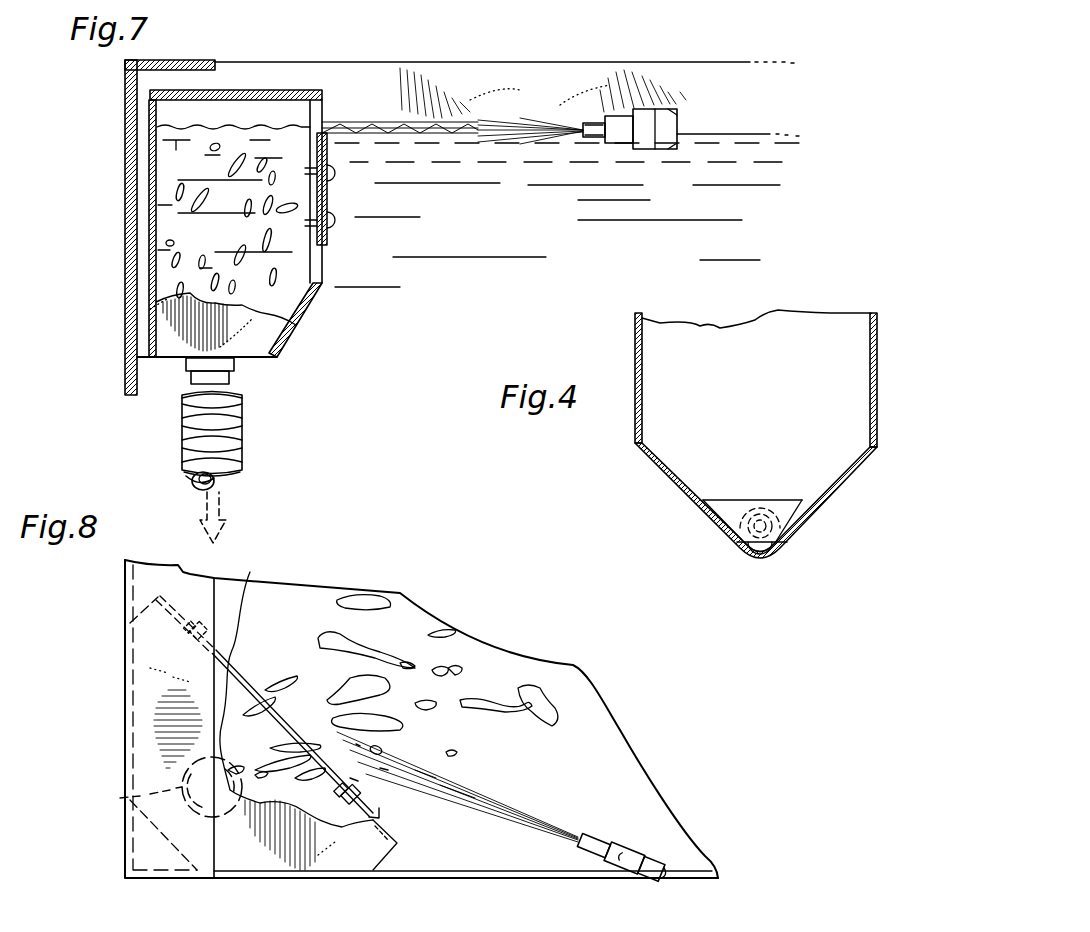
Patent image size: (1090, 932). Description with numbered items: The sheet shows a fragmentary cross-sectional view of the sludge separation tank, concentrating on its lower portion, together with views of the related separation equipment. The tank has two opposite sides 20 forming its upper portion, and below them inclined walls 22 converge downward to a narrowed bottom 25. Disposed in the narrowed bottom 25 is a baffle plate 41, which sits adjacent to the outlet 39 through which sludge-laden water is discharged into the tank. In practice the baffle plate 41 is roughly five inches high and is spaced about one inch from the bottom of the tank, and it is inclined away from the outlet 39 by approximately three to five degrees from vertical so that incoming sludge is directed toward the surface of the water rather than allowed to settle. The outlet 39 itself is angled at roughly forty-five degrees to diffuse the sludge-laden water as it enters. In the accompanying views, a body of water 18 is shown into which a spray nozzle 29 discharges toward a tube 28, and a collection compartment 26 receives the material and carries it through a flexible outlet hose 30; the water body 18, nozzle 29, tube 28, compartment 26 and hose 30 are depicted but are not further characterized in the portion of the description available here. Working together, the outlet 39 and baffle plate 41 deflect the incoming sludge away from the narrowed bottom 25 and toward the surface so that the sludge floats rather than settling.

In FIG. 7, the water / liquid body 18 is at (508, 225).
In FIG. 8, the water / liquid body 18 is at (502, 681).
In FIG. 4, the opposite sides 20 is at (880, 345).
In FIG. 4, the inclined bottom walls 22 is at (666, 480).
In FIG. 4, the narrowed bottom 25 is at (742, 556).
In FIG. 7, the sediment collection compartment 26 is at (170, 222).
In FIG. 8, the sediment collection compartment 26 is at (280, 842).
In FIG. 7, the suction tube 28 is at (330, 127).
In FIG. 8, the suction tube 28 is at (240, 600).
In FIG. 7, the spray nozzle 29 is at (653, 112).
In FIG. 8, the spray nozzle 29 is at (628, 858).
In FIG. 7, the flexible outlet hose 30 is at (185, 435).
In FIG. 8, the flexible outlet hose 30 is at (180, 792).
In FIG. 4, the outlet 39 is at (762, 550).
In FIG. 4, the baffle plate 41 is at (795, 513).